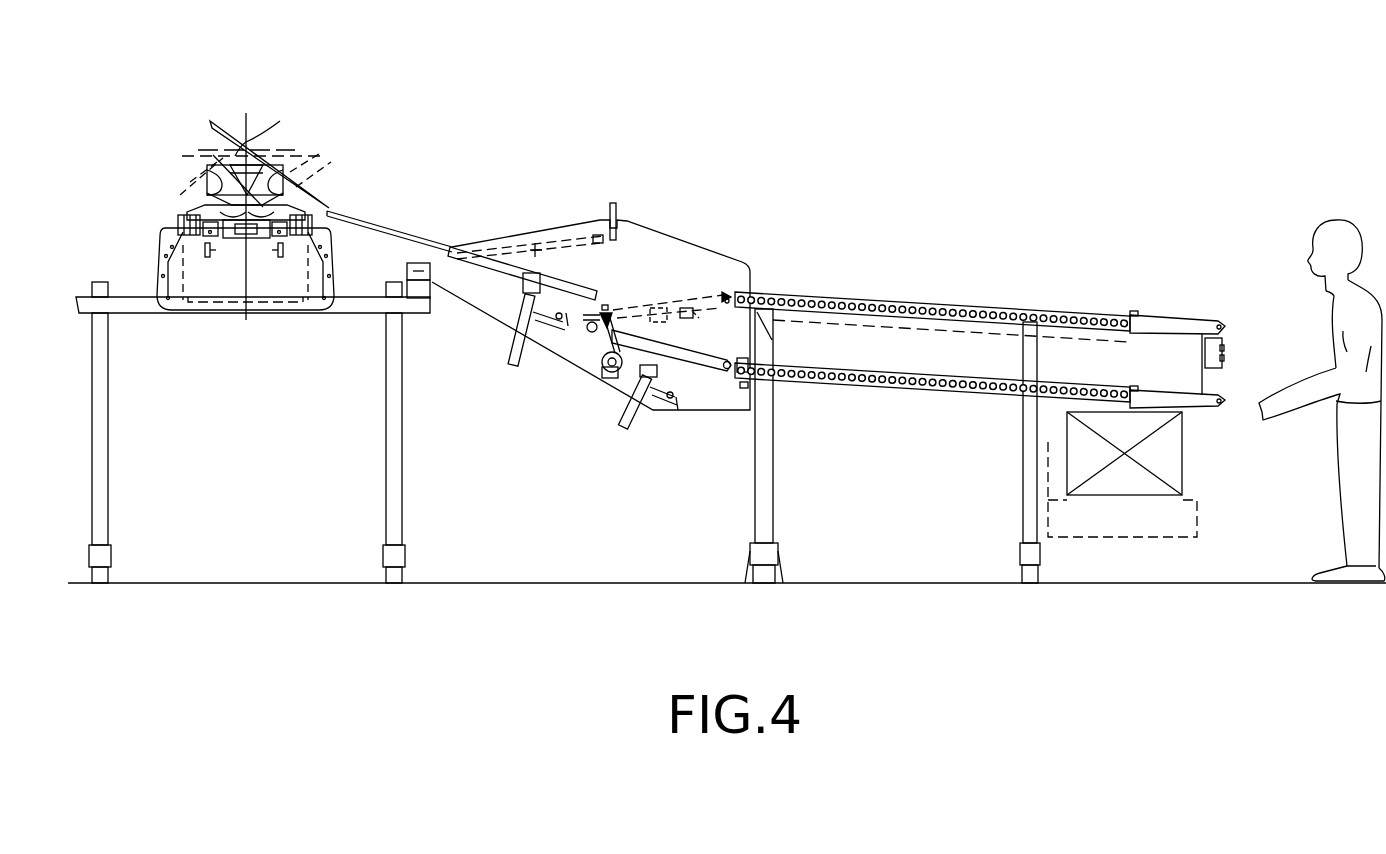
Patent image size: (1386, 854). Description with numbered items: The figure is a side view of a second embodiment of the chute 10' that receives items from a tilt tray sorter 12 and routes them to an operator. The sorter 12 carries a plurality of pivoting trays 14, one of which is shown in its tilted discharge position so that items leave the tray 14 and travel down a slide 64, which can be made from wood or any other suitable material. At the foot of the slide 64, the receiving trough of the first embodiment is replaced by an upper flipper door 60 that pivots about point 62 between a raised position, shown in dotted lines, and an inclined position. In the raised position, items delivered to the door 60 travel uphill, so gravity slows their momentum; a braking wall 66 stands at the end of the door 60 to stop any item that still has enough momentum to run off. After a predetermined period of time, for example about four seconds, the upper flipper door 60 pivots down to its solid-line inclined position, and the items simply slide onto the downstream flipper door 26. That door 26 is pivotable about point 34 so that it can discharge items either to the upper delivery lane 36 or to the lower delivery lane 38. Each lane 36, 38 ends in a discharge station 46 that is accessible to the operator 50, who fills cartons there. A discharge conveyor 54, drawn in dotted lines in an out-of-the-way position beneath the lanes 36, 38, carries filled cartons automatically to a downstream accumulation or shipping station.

The chute 10' is at (937, 327).
The tilt tray sorter 12 is at (313, 116).
The tray 14 is at (315, 188).
The flipper door 26 is at (687, 297).
The pivot point 34 is at (590, 330).
The upper delivery lane 36 is at (821, 286).
The lower delivery lane 38 is at (905, 396).
The discharge station 46 is at (1172, 390).
The operator 50 is at (1338, 220).
The discharge conveyor 54 is at (1093, 498).
The upper flipper door 60 is at (528, 212).
The pivot point 62 is at (452, 245).
The slide 64 is at (368, 237).
The braking wall 66 is at (613, 203).